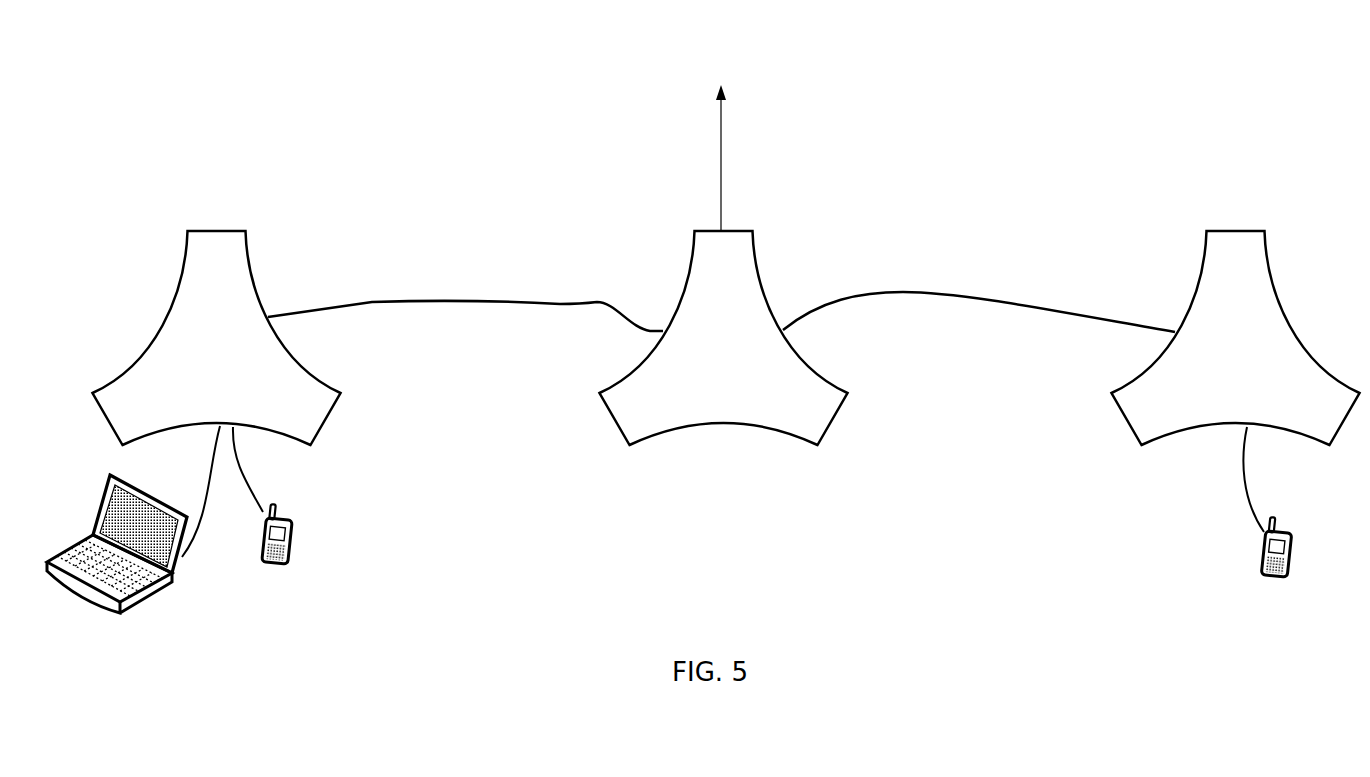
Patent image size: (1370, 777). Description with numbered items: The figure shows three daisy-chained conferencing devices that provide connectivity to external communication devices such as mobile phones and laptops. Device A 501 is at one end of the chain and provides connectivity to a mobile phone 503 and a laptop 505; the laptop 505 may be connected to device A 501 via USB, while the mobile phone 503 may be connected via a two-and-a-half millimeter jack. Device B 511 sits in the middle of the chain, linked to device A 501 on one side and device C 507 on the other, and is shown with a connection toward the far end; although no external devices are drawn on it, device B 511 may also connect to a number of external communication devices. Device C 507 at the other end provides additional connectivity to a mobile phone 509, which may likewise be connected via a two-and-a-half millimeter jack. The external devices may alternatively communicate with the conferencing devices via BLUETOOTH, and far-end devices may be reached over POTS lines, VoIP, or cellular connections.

The device A 501 is at (222, 228).
The mobile phone 503 is at (277, 567).
The laptop 505 is at (120, 613).
The device C 507 is at (1235, 228).
The mobile phone 509 is at (1277, 582).
The device B 511 is at (785, 435).